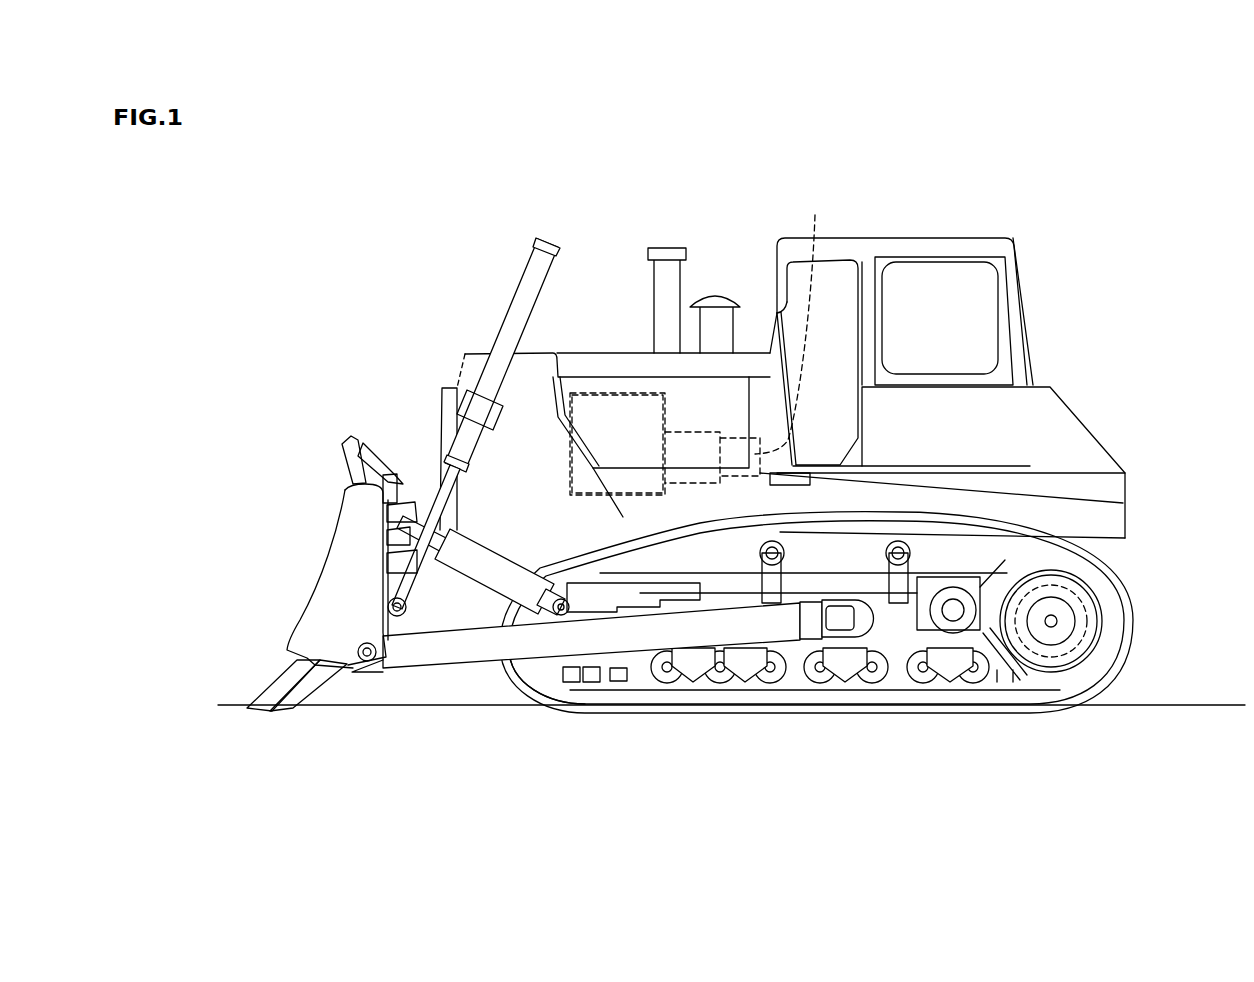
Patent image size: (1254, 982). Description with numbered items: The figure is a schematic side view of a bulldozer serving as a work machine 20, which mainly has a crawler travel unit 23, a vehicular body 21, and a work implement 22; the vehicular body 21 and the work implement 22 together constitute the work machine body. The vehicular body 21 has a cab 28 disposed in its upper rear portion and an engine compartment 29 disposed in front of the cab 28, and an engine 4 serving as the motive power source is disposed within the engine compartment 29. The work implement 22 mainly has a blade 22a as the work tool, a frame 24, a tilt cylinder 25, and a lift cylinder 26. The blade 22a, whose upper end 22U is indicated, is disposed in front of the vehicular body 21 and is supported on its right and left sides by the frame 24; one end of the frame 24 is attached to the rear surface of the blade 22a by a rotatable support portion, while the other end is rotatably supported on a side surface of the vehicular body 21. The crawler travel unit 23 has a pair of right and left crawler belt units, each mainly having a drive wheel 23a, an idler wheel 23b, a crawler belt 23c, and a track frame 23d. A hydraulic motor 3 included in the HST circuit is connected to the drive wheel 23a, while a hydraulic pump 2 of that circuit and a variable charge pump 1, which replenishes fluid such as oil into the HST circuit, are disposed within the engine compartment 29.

The variable charge pump 1 is at (788, 320).
The hydraulic pump 2 is at (705, 432).
The hydraulic motor 3 is at (1105, 625).
The engine 4 is at (583, 390).
The work machine 20 is at (985, 196).
The vehicular body 21 is at (740, 403).
The work implement 22 is at (341, 334).
The upper end 22U is at (342, 438).
The blade 22a is at (330, 562).
The crawler travel unit 23 is at (840, 715).
The drive wheel 23a is at (1045, 665).
The idler wheel 23b is at (557, 690).
The crawler belt 23c is at (950, 712).
The track frame 23d is at (896, 613).
The frame 24 is at (498, 643).
The tilt cylinder 25 is at (468, 570).
The lift cylinder 26 is at (545, 250).
The cab 28 is at (877, 257).
The engine compartment 29 is at (618, 387).